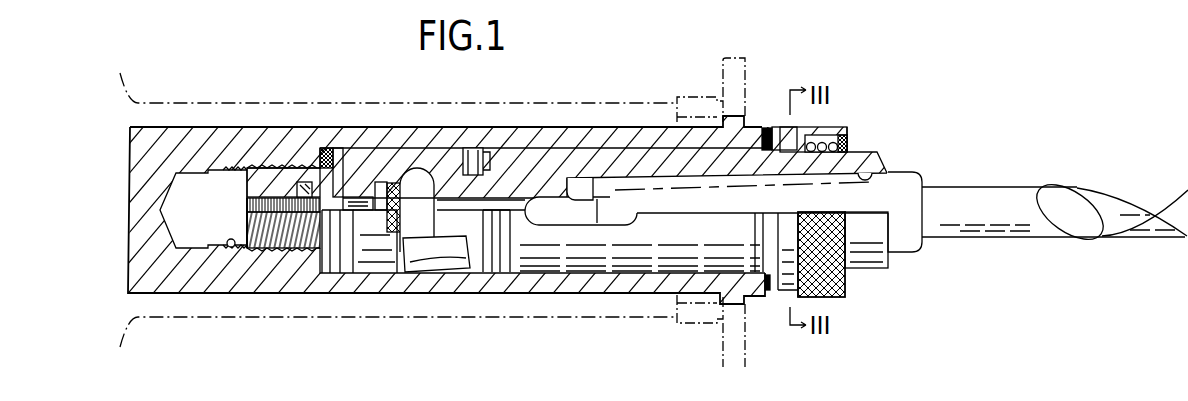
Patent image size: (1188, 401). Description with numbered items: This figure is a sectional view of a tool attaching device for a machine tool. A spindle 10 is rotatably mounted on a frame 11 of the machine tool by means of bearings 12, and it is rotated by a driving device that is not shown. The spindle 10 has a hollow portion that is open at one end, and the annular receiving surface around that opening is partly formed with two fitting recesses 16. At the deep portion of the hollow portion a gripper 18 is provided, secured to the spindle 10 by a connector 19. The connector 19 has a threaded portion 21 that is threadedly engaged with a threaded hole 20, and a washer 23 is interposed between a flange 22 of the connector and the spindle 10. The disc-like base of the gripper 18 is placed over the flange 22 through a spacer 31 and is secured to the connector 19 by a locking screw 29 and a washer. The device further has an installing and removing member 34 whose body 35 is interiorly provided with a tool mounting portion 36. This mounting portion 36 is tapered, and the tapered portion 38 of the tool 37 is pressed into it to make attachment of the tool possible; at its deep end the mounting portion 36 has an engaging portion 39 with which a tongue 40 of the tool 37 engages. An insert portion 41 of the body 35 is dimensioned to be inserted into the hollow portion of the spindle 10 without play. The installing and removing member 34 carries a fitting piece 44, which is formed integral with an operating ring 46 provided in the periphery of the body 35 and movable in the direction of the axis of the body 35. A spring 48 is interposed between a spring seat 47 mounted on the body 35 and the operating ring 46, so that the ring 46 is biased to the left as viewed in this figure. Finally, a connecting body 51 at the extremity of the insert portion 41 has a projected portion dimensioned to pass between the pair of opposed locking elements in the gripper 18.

The spindle 10 is at (205, 132).
The frame 11 is at (734, 340).
The bearings 12 is at (690, 310).
The fitting recesses 16 is at (770, 127).
The gripper 18 is at (460, 147).
The connector 19 is at (308, 168).
The threaded hole 20 is at (231, 246).
The threaded portion 21 is at (277, 240).
The flange 22 is at (340, 150).
The washer 23 is at (323, 160).
The locking screw 29 is at (408, 172).
The spacer 31 is at (353, 150).
The installing and removing member 34 is at (892, 279).
The body 35 is at (667, 150).
The tool mounting portion 36 is at (877, 155).
The tool 37 is at (977, 238).
The tapered portion 38 is at (866, 196).
The engaging portion 39 is at (582, 196).
The tongue 40 is at (600, 207).
The insert portion 41 is at (540, 148).
The fitting piece 44 is at (782, 125).
The operating ring 46 is at (836, 297).
The spring seat 47 is at (847, 150).
The spring 48 is at (833, 127).
The connecting body 51 is at (480, 157).